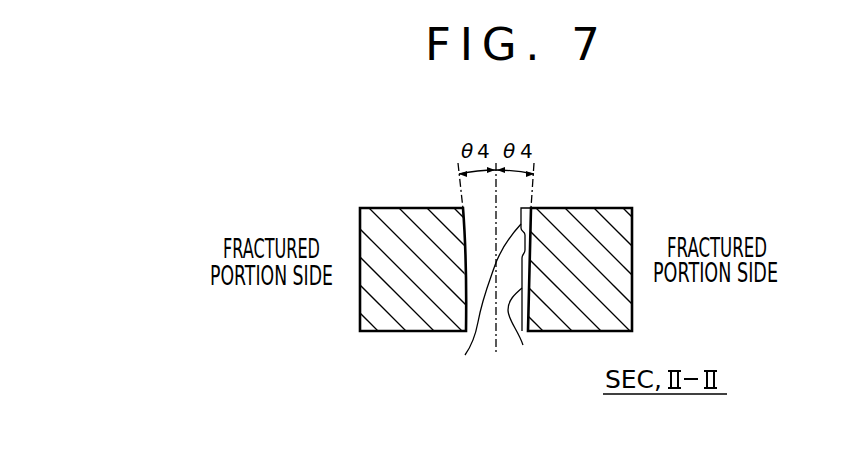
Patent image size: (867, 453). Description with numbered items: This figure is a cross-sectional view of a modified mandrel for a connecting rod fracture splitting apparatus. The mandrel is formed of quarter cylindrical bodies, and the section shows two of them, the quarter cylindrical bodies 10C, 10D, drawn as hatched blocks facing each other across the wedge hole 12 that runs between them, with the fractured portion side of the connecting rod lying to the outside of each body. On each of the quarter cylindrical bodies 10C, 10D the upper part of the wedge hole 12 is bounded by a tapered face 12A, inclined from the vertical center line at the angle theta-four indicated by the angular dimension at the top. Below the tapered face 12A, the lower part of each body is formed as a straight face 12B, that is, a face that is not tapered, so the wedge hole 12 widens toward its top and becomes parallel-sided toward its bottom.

The quarter cylindrical body 10C is at (398, 217).
The quarter cylindrical body 10D is at (578, 215).
The wedge hole 12 is at (487, 323).
The tapered face 12A is at (465, 355).
The straight face 12B is at (523, 345).